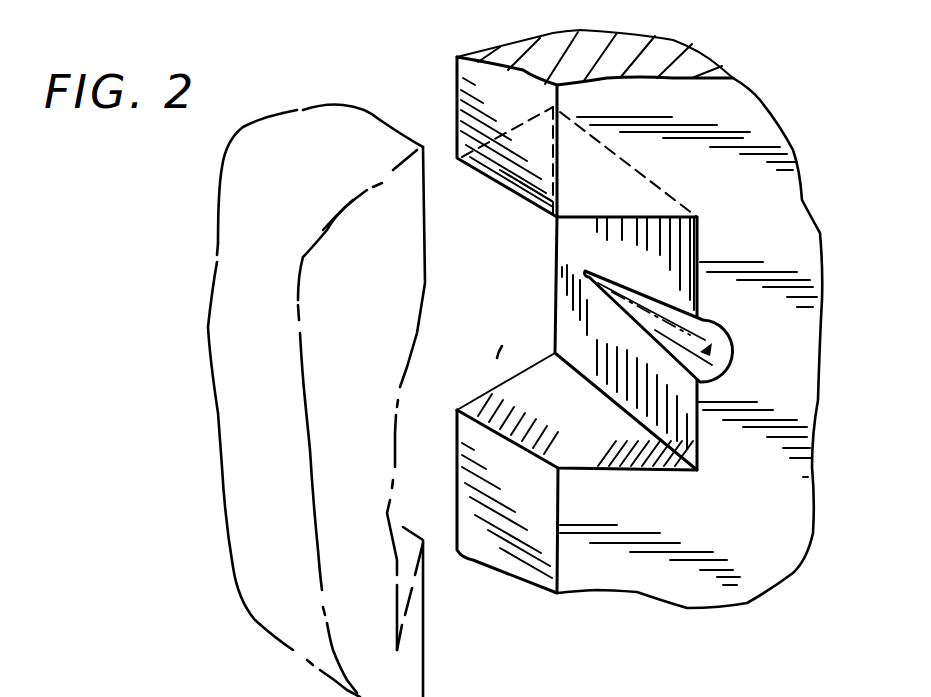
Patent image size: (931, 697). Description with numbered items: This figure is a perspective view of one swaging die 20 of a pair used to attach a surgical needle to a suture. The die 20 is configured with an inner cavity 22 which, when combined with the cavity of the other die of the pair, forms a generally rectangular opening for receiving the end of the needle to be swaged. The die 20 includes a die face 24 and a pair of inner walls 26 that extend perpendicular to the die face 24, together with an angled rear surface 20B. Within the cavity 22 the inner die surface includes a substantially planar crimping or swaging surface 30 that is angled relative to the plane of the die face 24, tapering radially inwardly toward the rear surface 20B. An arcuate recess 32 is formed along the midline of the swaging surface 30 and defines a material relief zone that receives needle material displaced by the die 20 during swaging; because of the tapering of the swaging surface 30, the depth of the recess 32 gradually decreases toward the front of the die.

The die 20 is at (268, 366).
The angled rear surface 20B is at (717, 527).
The inner cavity 22 is at (473, 208).
The die face 24 is at (521, 108).
The inner walls 26 is at (580, 448).
The swaging surface 30 is at (590, 258).
The arcuate recess 32 is at (725, 362).